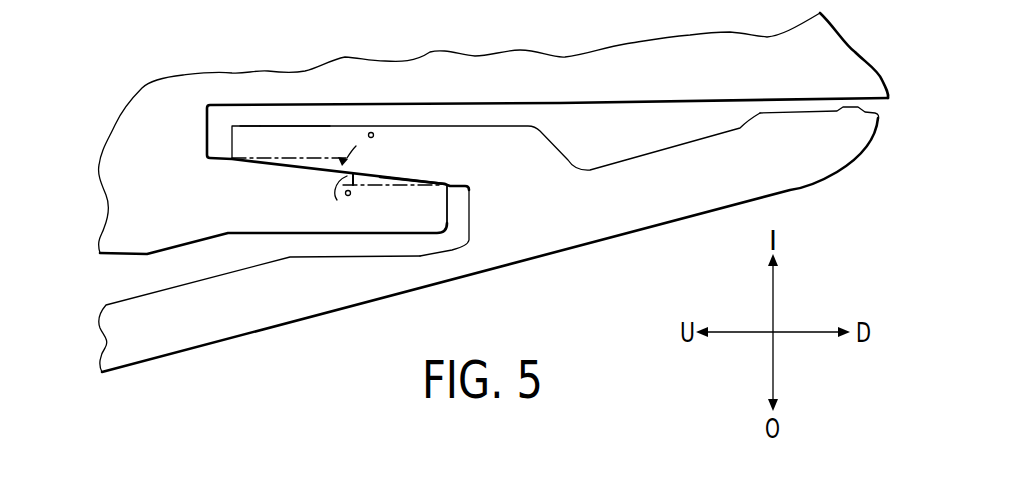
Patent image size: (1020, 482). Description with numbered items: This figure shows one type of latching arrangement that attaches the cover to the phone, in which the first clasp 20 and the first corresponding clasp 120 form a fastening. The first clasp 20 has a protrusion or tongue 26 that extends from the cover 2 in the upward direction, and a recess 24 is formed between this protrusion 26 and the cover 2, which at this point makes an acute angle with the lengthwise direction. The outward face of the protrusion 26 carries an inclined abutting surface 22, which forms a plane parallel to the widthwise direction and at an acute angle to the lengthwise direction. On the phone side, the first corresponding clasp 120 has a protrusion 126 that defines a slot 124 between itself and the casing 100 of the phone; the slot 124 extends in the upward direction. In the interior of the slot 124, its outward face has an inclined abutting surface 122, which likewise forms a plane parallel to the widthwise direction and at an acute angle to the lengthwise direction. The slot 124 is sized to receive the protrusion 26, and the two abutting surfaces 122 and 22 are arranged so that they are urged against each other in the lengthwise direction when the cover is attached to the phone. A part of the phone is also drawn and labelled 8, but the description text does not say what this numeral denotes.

The casing 100 is at (276, 70).
The cover 2 is at (165, 335).
The upper part 8 is at (805, 163).
The first clasp 20 is at (540, 194).
The inclined abutting surface 22 is at (415, 178).
The recess 24 is at (462, 223).
The protrusion 26 is at (278, 142).
The first corresponding clasp 120 is at (153, 205).
The inclined abutting surface 122 is at (283, 167).
The slot 124 is at (218, 135).
The protrusion 126 is at (411, 230).